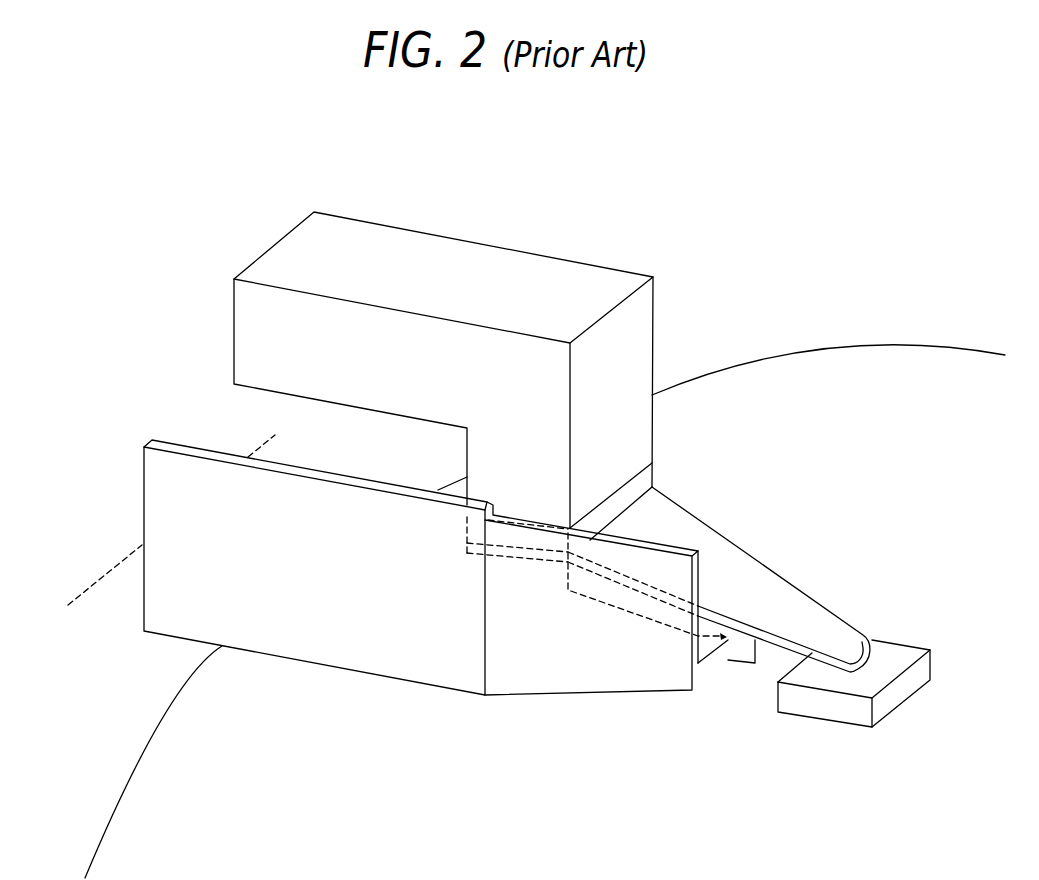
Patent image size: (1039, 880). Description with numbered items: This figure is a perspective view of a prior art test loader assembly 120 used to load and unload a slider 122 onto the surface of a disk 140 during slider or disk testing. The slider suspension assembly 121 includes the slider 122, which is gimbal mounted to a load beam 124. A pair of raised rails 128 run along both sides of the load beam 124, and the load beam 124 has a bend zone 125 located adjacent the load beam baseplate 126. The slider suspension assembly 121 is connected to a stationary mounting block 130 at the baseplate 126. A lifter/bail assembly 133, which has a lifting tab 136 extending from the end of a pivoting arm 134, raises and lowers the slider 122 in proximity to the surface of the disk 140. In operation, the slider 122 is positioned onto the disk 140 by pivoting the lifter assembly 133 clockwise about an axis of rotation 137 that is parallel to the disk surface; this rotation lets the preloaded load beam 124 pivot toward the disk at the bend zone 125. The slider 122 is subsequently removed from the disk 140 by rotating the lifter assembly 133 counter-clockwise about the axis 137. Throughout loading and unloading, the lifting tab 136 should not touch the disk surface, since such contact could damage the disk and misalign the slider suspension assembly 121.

The test loader assembly 120 is at (137, 373).
The slider suspension assembly 121 is at (832, 469).
The slider 122 is at (893, 652).
The load beam 124 is at (793, 597).
The bend zone 125 is at (628, 506).
The load beam baseplate 126 is at (652, 463).
The raised rails 128 is at (747, 651).
The stationary mounting block 130 is at (551, 268).
The lifter/bail assembly 133 is at (558, 730).
The pivoting arm 134 is at (292, 640).
The lifting tab 136 is at (730, 658).
The axis of rotation 137 is at (82, 588).
The disk 140 is at (958, 497).